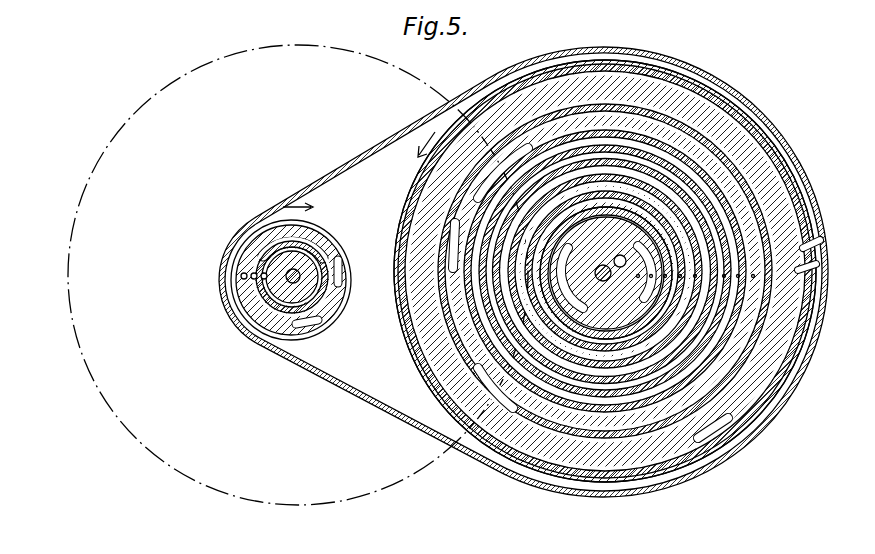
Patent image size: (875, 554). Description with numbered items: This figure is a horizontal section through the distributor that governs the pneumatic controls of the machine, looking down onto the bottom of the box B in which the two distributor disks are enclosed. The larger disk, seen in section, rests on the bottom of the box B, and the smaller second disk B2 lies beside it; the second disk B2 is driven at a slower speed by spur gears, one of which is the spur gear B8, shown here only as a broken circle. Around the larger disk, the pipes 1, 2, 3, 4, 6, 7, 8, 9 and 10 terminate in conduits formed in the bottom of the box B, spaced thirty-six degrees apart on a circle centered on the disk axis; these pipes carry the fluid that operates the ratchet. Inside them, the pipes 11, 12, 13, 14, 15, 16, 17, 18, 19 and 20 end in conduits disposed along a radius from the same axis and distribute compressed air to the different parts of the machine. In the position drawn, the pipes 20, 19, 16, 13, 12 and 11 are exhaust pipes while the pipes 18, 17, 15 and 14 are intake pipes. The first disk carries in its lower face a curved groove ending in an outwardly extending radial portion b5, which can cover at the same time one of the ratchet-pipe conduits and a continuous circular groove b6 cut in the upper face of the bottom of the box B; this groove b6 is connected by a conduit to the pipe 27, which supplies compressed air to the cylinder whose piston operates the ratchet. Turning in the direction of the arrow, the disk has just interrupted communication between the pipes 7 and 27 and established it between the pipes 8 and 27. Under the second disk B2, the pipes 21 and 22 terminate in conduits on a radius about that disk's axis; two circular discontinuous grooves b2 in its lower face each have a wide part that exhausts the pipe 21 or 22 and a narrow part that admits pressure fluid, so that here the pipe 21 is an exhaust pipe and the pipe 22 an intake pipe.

The box B is at (345, 149).
The spur gear B8 is at (151, 81).
The second disk B2 is at (326, 224).
The circular discontinuous grooves b2 is at (283, 298).
The pipe 1 is at (440, 160).
The pipe 2 is at (405, 266).
The pipe 3 is at (443, 378).
The pipe 4 is at (527, 462).
The pipe 6 is at (748, 378).
The pipe 7 is at (808, 288).
The pipe 8 is at (748, 157).
The pipe 9 is at (663, 80).
The pipe 10 is at (507, 72).
The pipe 11 is at (751, 282).
The pipe 12 is at (737, 282).
The pipe 13 is at (723, 282).
The pipe 14 is at (773, 205).
The pipe 15 is at (694, 282).
The pipe 16 is at (679, 282).
The pipe 17 is at (663, 282).
The pipe 18 is at (650, 282).
The pipe 19 is at (636, 282).
The pipe 20 is at (606, 273).
The pipe 21 is at (238, 270).
The pipe 22 is at (255, 278).
The pipe 27 is at (790, 268).
The outwardly extending radial portion b5 is at (803, 242).
The continuous circular groove b6 is at (798, 258).